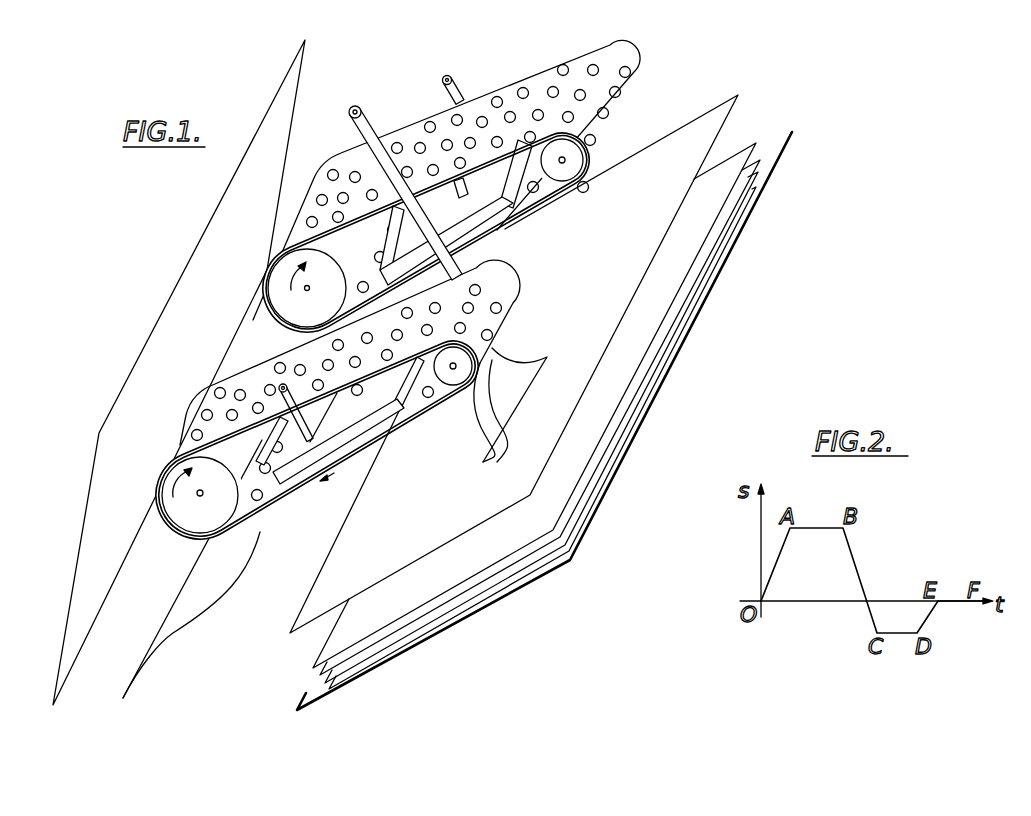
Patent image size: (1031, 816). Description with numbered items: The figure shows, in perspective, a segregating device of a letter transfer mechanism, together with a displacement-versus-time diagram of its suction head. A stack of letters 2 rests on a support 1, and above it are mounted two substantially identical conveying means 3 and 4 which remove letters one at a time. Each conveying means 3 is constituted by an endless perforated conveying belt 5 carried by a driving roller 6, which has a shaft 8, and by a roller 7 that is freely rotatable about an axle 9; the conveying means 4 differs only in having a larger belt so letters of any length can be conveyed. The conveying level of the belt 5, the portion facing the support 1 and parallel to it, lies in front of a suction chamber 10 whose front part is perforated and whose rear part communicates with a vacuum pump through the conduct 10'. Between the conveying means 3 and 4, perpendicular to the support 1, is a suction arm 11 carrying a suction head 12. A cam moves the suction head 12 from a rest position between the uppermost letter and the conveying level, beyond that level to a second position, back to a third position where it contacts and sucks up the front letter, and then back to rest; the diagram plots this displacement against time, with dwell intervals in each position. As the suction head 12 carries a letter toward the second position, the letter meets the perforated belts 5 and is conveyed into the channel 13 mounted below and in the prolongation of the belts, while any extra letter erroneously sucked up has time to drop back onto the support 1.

The support 1 is at (480, 603).
The stack of letters 2 is at (313, 623).
The conveying means 3 is at (268, 353).
The conveying means 4 is at (522, 82).
The endless perforated conveying belt 5 is at (307, 347).
The driving roller 6 is at (190, 508).
The roller 7 is at (452, 383).
The shaft 8 is at (204, 494).
The axle 9 is at (454, 369).
The suction chamber 10 is at (393, 354).
The conduct 10' is at (371, 259).
The suction arm 11 is at (448, 279).
The suction head 12 is at (481, 458).
The channel 13 is at (133, 680).